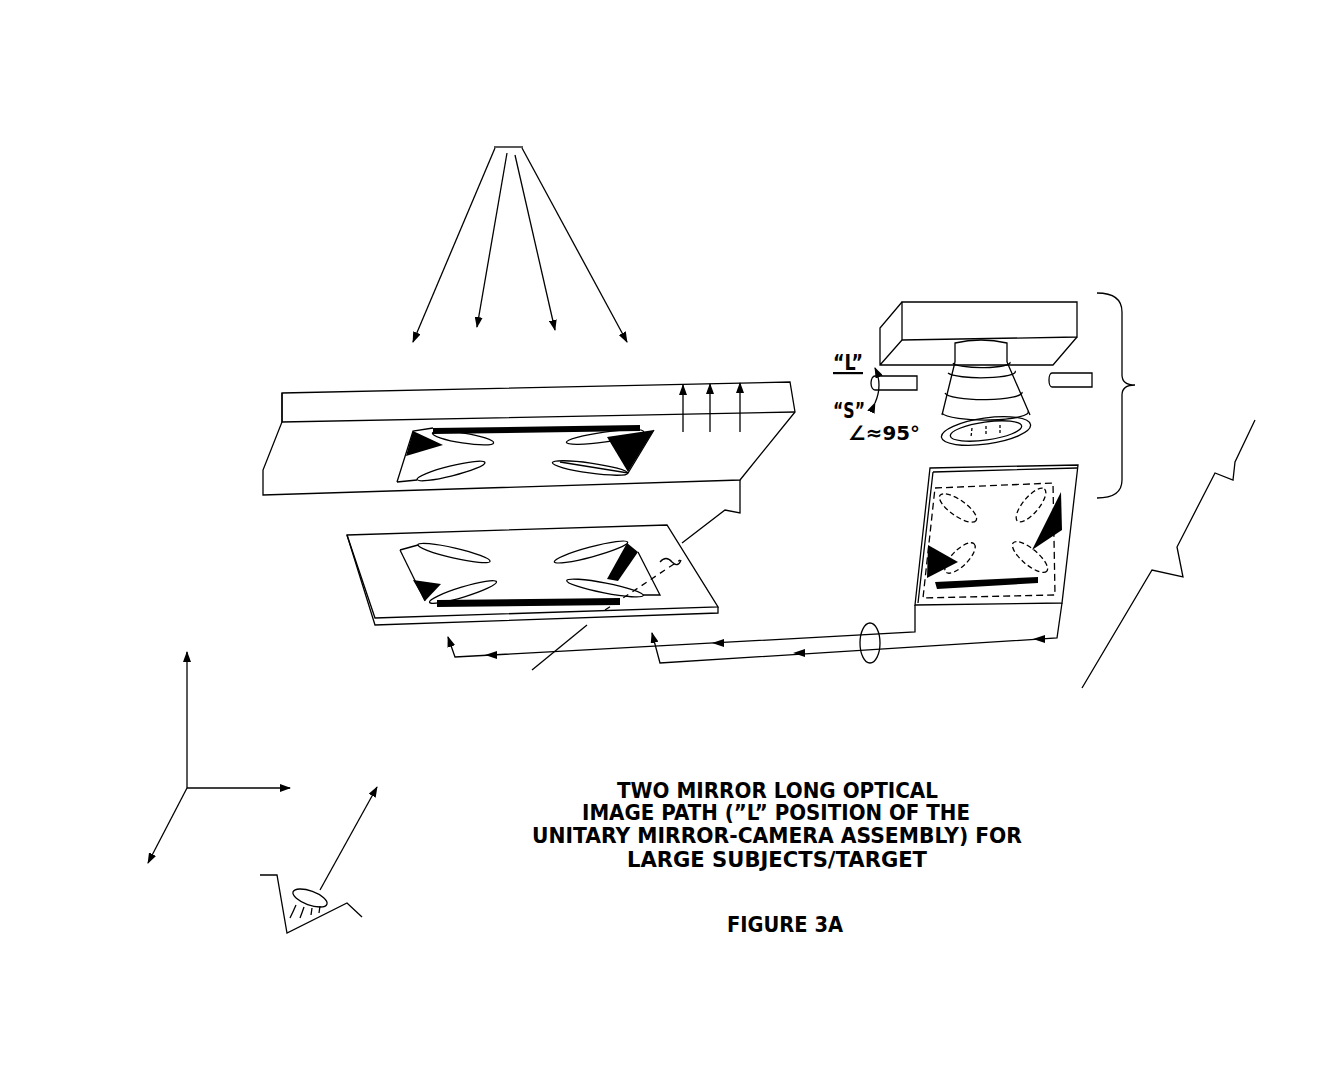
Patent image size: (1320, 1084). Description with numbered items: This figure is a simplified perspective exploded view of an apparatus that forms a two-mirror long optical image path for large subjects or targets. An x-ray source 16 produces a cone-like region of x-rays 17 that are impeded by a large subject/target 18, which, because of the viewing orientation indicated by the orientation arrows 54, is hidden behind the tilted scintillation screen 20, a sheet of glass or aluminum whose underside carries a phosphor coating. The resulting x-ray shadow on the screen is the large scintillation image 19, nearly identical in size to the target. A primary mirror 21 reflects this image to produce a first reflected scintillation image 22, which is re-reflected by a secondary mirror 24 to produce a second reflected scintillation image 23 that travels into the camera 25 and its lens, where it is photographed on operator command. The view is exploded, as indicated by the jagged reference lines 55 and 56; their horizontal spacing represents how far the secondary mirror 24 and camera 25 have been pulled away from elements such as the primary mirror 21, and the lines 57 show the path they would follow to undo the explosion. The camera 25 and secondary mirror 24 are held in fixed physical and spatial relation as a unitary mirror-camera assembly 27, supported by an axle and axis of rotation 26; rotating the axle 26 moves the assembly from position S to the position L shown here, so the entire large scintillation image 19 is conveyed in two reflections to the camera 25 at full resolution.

The x-ray source 16 is at (523, 128).
The x-rays 17 is at (590, 243).
The large subject/target 18 is at (617, 382).
The large scintillation image 19 is at (408, 432).
The scintillation screen 20 is at (303, 390).
The primary mirror 21 is at (373, 564).
The first reflected scintillation image 22 is at (423, 604).
The second reflected scintillation image 23 is at (952, 505).
The secondary mirror 24 is at (987, 608).
The camera 25 is at (978, 376).
The axle and axis of rotation 26 is at (1087, 363).
The unitary mirror-camera assembly 27 is at (1174, 395).
The orientation arrows 54 is at (192, 790).
The jagged reference line 55 is at (585, 635).
The jagged reference line 56 is at (1130, 623).
The path lines 57 is at (867, 663).